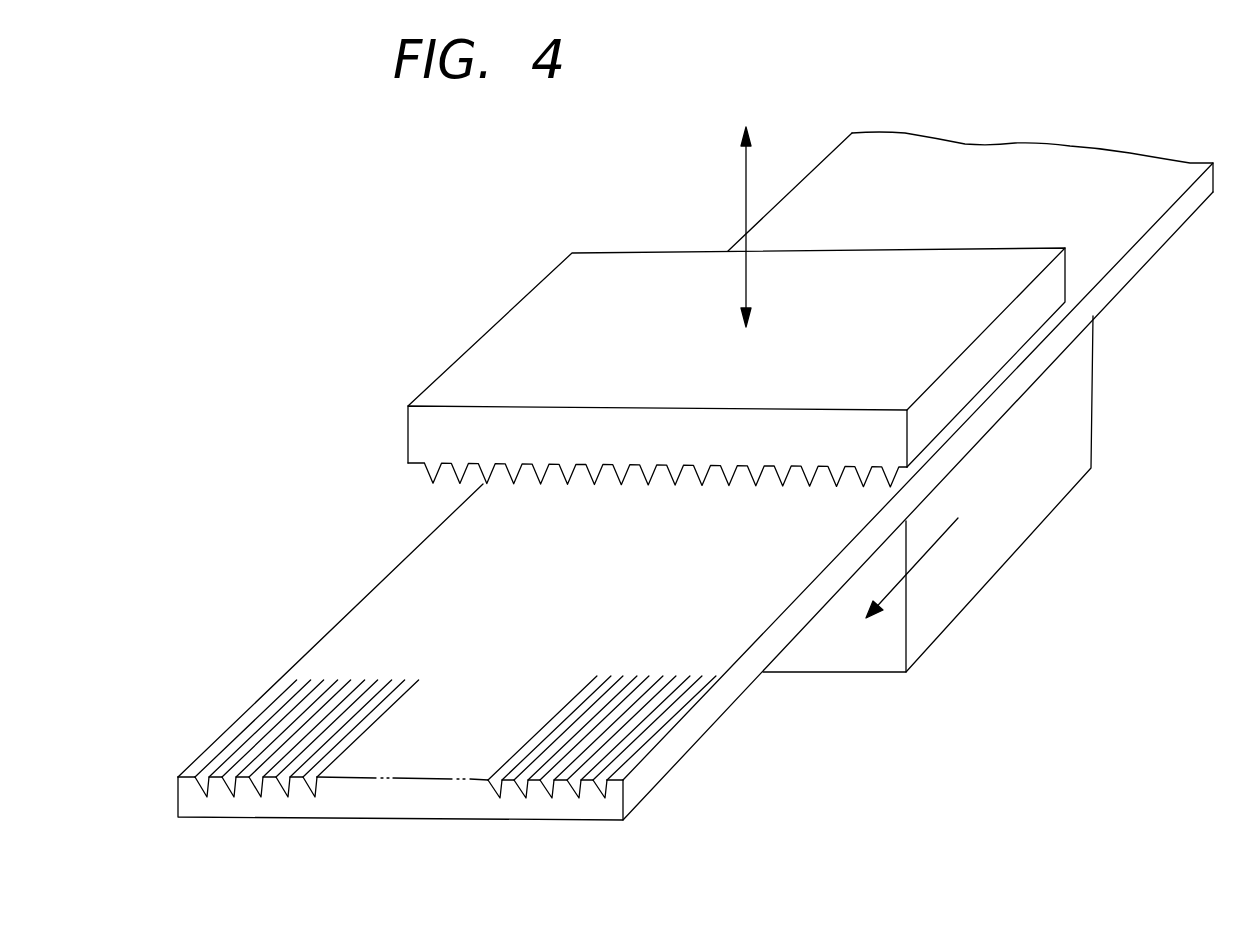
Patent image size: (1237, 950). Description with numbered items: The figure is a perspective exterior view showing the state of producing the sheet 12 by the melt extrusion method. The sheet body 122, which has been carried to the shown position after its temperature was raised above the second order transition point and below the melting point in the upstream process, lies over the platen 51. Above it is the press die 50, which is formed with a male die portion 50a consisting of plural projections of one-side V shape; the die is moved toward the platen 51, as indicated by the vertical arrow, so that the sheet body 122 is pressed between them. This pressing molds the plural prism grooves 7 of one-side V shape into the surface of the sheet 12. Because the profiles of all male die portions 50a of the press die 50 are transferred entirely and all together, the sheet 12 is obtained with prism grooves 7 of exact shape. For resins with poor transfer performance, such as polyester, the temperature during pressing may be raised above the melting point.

The prism grooves 7 is at (298, 733).
The sheet 12 is at (690, 740).
The press die 50 is at (538, 310).
The male die portion 50a is at (535, 478).
The platen 51 is at (983, 567).
The sheet body 122 is at (998, 163).